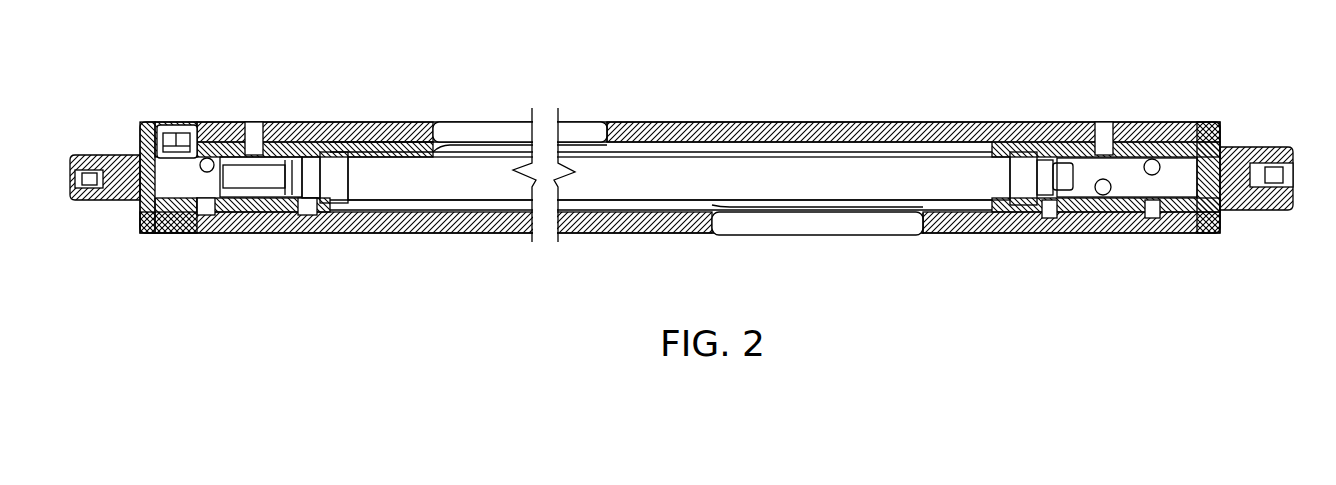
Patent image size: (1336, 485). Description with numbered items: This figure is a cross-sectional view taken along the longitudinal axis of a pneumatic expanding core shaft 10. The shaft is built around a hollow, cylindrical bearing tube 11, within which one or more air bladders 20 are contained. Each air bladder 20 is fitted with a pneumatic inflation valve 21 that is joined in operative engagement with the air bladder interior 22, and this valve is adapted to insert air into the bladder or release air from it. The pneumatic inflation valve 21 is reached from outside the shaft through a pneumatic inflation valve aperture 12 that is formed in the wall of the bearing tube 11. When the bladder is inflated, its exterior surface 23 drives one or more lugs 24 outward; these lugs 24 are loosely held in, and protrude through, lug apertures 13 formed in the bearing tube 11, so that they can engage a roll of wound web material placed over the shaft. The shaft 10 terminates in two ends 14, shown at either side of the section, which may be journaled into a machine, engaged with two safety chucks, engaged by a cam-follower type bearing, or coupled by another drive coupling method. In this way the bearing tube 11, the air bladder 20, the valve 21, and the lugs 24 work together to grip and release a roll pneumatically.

The pneumatic expanding core shaft 10 is at (1228, 61).
The bearing tube 11 is at (897, 122).
The pneumatic inflation valve aperture 12 is at (196, 126).
The lug apertures 13 is at (606, 122).
The ends 14 is at (104, 152).
The air bladder 20 is at (970, 168).
The pneumatic inflation valve 21 is at (177, 126).
The air bladder interior 22 is at (812, 170).
The exterior surface 23 is at (680, 152).
The lugs 24 is at (492, 128).